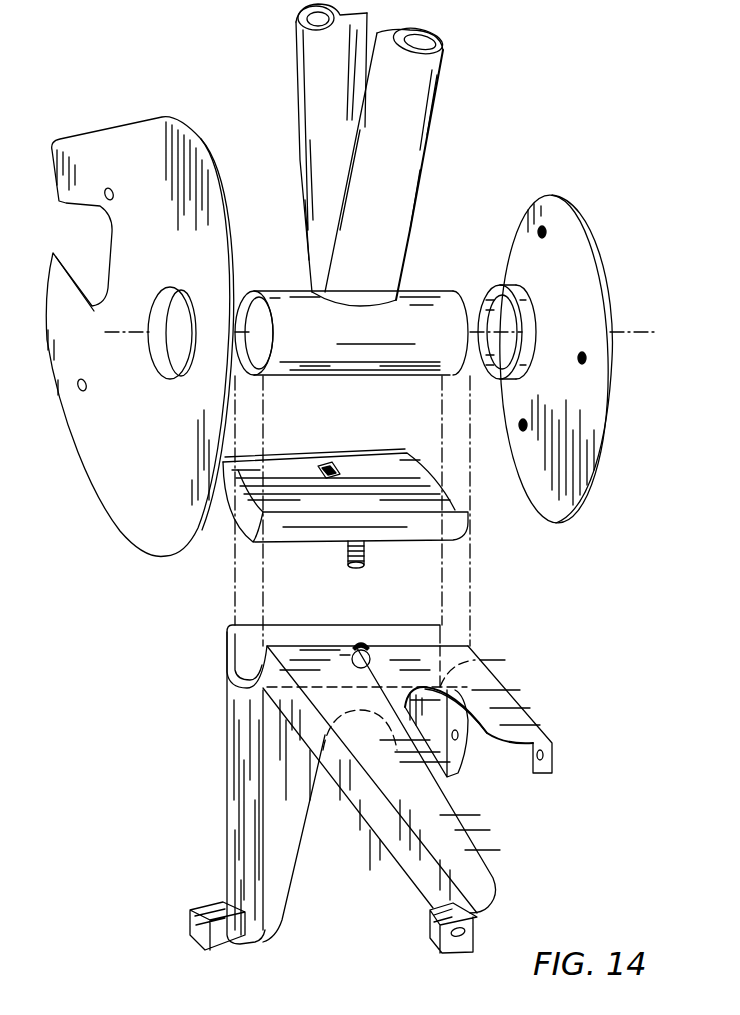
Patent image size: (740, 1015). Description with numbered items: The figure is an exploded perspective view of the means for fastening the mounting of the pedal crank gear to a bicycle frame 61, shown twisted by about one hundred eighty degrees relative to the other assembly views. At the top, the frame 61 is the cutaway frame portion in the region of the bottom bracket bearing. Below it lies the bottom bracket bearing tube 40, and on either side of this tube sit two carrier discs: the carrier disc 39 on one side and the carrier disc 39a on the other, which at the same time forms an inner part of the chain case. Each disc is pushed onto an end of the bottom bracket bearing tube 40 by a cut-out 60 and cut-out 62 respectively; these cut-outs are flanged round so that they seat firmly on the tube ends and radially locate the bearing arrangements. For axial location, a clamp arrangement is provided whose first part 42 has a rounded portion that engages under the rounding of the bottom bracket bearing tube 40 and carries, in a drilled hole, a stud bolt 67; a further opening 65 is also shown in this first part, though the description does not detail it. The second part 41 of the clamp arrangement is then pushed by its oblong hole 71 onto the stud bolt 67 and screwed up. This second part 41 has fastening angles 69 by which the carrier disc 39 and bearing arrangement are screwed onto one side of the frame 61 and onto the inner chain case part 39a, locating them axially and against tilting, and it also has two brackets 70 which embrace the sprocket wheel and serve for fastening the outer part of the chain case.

The carrier disc 39 is at (593, 323).
The carrier disc 39a is at (206, 256).
The bottom bracket bearing tube 40 is at (425, 293).
The second part of the clamp arrangement 41 is at (446, 812).
The first part of the clamp arrangement 42 is at (415, 522).
The cut-out 60 is at (485, 362).
The bicycle frame 61 is at (441, 83).
The cut-out 62 is at (168, 365).
The slot 65 is at (325, 462).
The stud bolt 67 is at (347, 553).
The fastening angles 69 is at (467, 754).
The brackets 70 is at (190, 927).
The oblong hole 71 is at (364, 643).